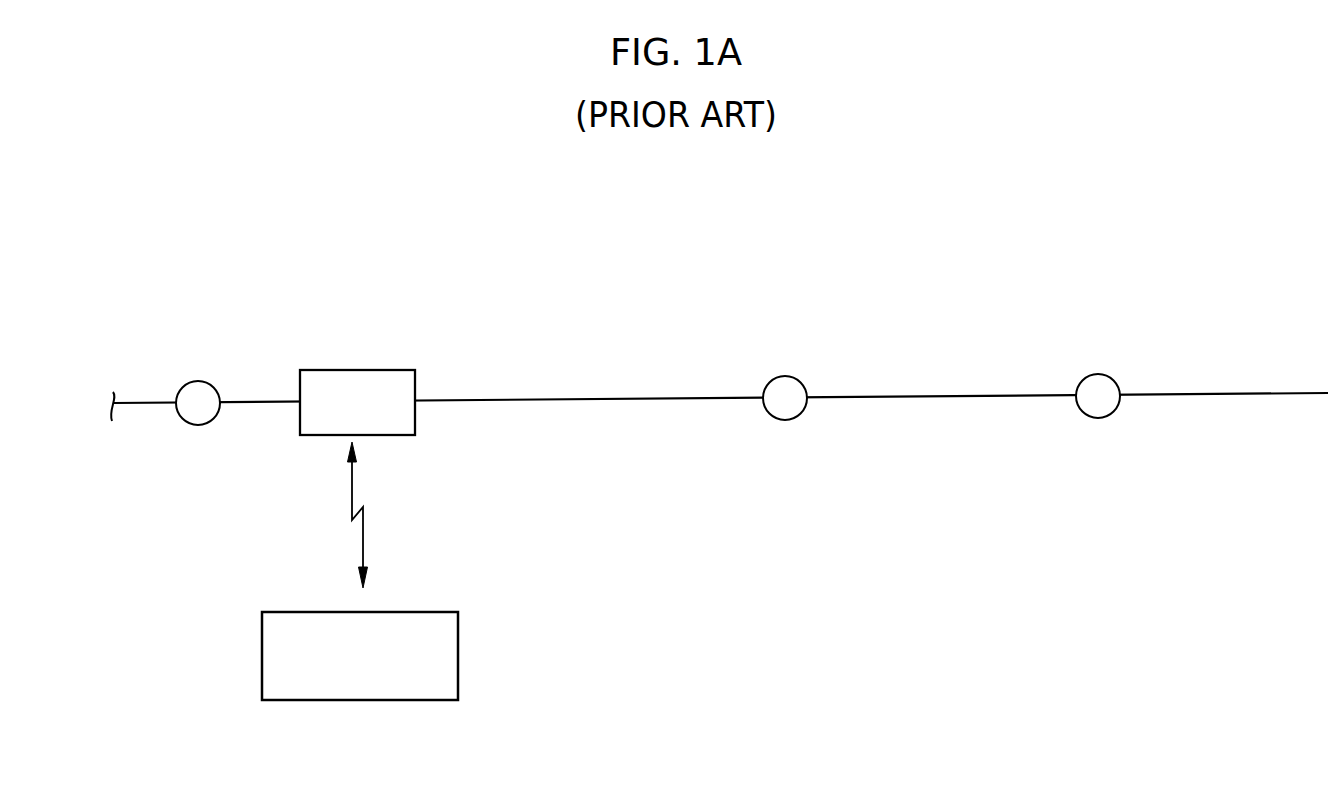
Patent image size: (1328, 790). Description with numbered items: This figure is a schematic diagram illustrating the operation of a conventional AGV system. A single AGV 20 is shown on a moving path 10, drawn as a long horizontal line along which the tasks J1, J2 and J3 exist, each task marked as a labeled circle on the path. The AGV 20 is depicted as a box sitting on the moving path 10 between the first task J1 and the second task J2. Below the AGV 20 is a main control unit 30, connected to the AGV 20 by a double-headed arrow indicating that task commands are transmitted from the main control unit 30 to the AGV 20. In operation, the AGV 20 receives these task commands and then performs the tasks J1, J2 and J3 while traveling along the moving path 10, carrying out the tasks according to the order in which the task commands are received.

The moving path 10 is at (590, 400).
The AGV 20 is at (383, 368).
The main control unit 30 is at (458, 640).
The task J1 is at (198, 403).
The task J2 is at (785, 398).
The task J3 is at (1098, 396).